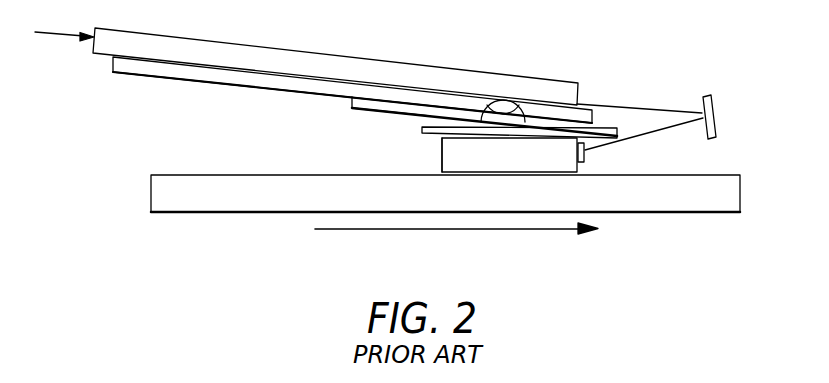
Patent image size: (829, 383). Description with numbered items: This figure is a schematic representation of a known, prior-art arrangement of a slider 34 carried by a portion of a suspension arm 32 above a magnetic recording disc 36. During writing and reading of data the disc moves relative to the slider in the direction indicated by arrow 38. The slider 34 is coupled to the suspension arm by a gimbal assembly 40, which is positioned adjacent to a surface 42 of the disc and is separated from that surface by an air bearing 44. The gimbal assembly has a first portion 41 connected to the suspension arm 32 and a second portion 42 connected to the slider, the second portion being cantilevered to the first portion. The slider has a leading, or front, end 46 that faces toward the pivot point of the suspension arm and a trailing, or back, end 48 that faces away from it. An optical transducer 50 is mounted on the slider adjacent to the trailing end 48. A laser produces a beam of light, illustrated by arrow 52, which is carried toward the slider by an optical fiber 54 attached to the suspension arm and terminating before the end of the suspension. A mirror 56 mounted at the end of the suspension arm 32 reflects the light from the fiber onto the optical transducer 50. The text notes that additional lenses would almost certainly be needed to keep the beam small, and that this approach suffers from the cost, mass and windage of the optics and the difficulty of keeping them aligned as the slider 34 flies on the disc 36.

The suspension arm 32 is at (288, 93).
The slider 34 is at (440, 150).
The magnetic recording disc 36 is at (741, 192).
The arrow 38 is at (495, 232).
The gimbal assembly 40 is at (537, 122).
The first portion 41 is at (432, 112).
The second portion 42 is at (465, 132).
The air bearing 44 is at (441, 173).
The leading end 46 is at (422, 131).
The trailing end 48 is at (596, 166).
The optical transducer 50 is at (588, 155).
The arrow 52 is at (57, 35).
The optical fiber 54 is at (315, 60).
The mirror 56 is at (715, 110).